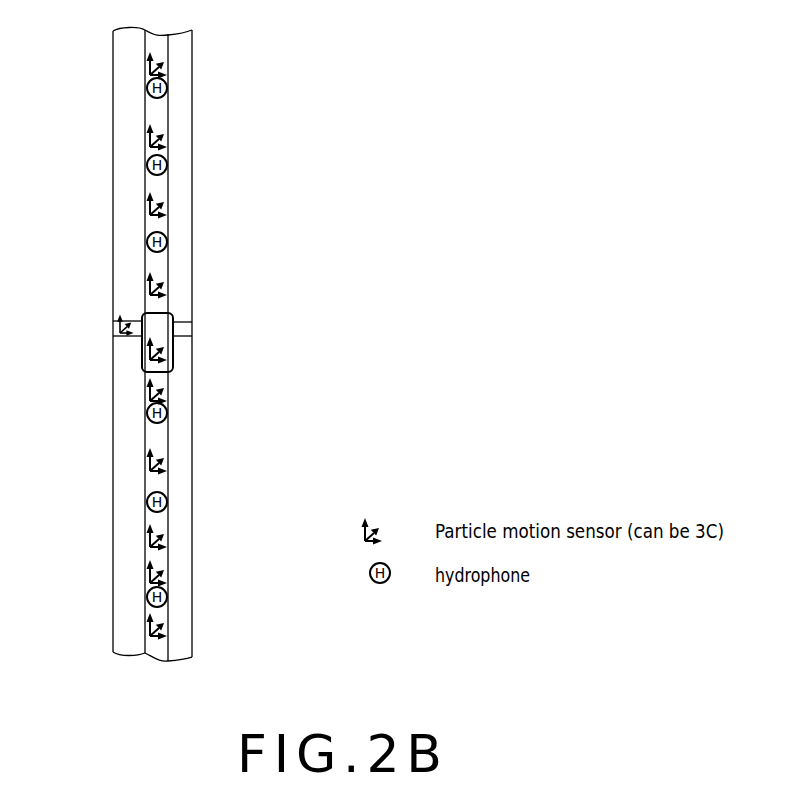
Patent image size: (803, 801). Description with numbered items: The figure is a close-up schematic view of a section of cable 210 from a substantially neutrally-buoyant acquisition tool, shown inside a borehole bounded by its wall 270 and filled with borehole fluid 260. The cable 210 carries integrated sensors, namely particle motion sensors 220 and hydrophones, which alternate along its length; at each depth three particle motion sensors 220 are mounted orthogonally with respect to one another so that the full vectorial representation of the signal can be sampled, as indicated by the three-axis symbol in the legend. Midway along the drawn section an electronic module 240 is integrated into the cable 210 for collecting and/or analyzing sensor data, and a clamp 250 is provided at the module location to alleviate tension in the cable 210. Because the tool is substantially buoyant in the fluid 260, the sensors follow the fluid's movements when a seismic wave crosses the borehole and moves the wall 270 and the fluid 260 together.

The cable 210 is at (158, 437).
The particle motion sensor 220 is at (392, 513).
The electronic module 240 is at (166, 322).
The clamp 250 is at (190, 322).
The borehole fluid 260 is at (128, 432).
The borehole wall 270 is at (112, 195).